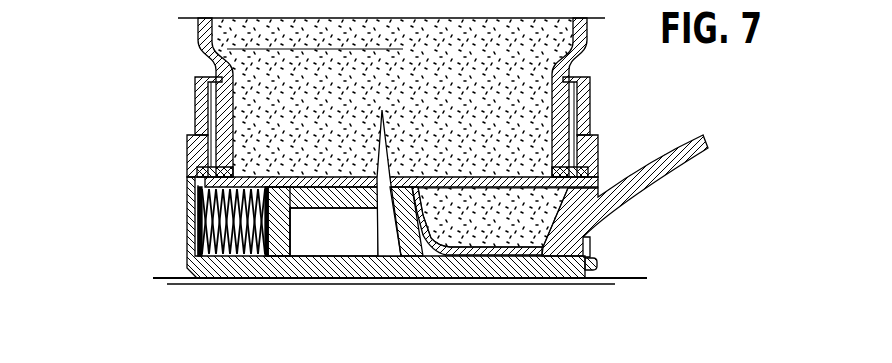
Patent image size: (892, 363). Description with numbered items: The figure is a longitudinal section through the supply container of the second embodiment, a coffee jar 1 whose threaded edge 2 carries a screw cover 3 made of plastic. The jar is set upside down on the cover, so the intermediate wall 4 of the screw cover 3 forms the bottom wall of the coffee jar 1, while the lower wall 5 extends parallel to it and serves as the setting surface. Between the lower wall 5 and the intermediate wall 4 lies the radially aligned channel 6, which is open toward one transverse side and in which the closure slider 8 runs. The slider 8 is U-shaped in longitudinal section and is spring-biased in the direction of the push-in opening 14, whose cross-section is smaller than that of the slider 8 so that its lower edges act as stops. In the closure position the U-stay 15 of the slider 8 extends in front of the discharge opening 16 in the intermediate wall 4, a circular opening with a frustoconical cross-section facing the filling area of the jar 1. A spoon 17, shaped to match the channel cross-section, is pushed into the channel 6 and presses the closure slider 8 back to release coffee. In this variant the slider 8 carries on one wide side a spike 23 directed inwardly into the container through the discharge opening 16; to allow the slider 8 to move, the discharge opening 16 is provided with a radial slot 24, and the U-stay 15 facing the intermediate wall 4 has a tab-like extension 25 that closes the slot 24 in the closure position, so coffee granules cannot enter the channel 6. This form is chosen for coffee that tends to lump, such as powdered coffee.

The coffee jar 1 is at (197, 33).
The edge 2 is at (197, 97).
The screw cover 3 is at (193, 155).
The intermediate wall 4 is at (195, 183).
The lower wall 5 is at (193, 279).
The channel 6 is at (247, 254).
The closure slider 8 is at (337, 208).
The push-in opening 14 is at (590, 241).
The U-stay 15 is at (312, 203).
The discharge opening 16 is at (475, 186).
The spoon 17 is at (517, 251).
The spike 23 is at (380, 218).
The radial slot 24 is at (422, 258).
The tab-like extension 25 is at (225, 252).